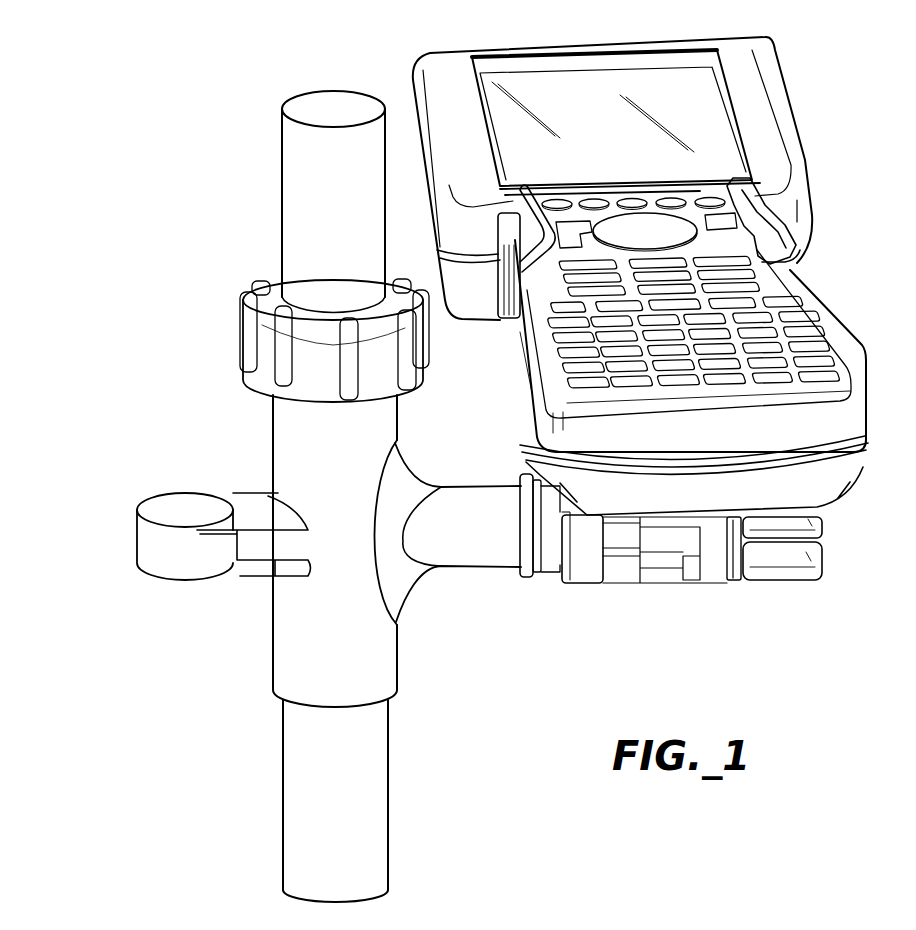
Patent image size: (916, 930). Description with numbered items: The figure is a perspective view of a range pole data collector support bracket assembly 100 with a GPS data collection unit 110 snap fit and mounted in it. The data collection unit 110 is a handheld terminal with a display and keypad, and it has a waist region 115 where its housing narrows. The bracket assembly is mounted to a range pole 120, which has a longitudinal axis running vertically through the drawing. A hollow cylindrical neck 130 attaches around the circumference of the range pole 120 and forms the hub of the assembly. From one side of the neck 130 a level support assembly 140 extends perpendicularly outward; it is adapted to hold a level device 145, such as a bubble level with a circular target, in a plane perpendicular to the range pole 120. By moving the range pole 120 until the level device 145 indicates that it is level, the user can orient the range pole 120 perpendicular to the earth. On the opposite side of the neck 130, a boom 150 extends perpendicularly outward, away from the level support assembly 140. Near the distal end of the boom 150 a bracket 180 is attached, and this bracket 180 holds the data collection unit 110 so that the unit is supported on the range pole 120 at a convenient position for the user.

The range pole data collector support bracket assembly 100 is at (652, 276).
The GPS data collection unit 110 is at (812, 206).
The waist region 115 is at (801, 263).
The range pole 120 is at (282, 194).
The hollow cylindrical neck 130 is at (273, 441).
The level support assembly 140 is at (183, 580).
The level device 145 is at (190, 505).
The boom 150 is at (460, 567).
The bracket 180 is at (825, 531).